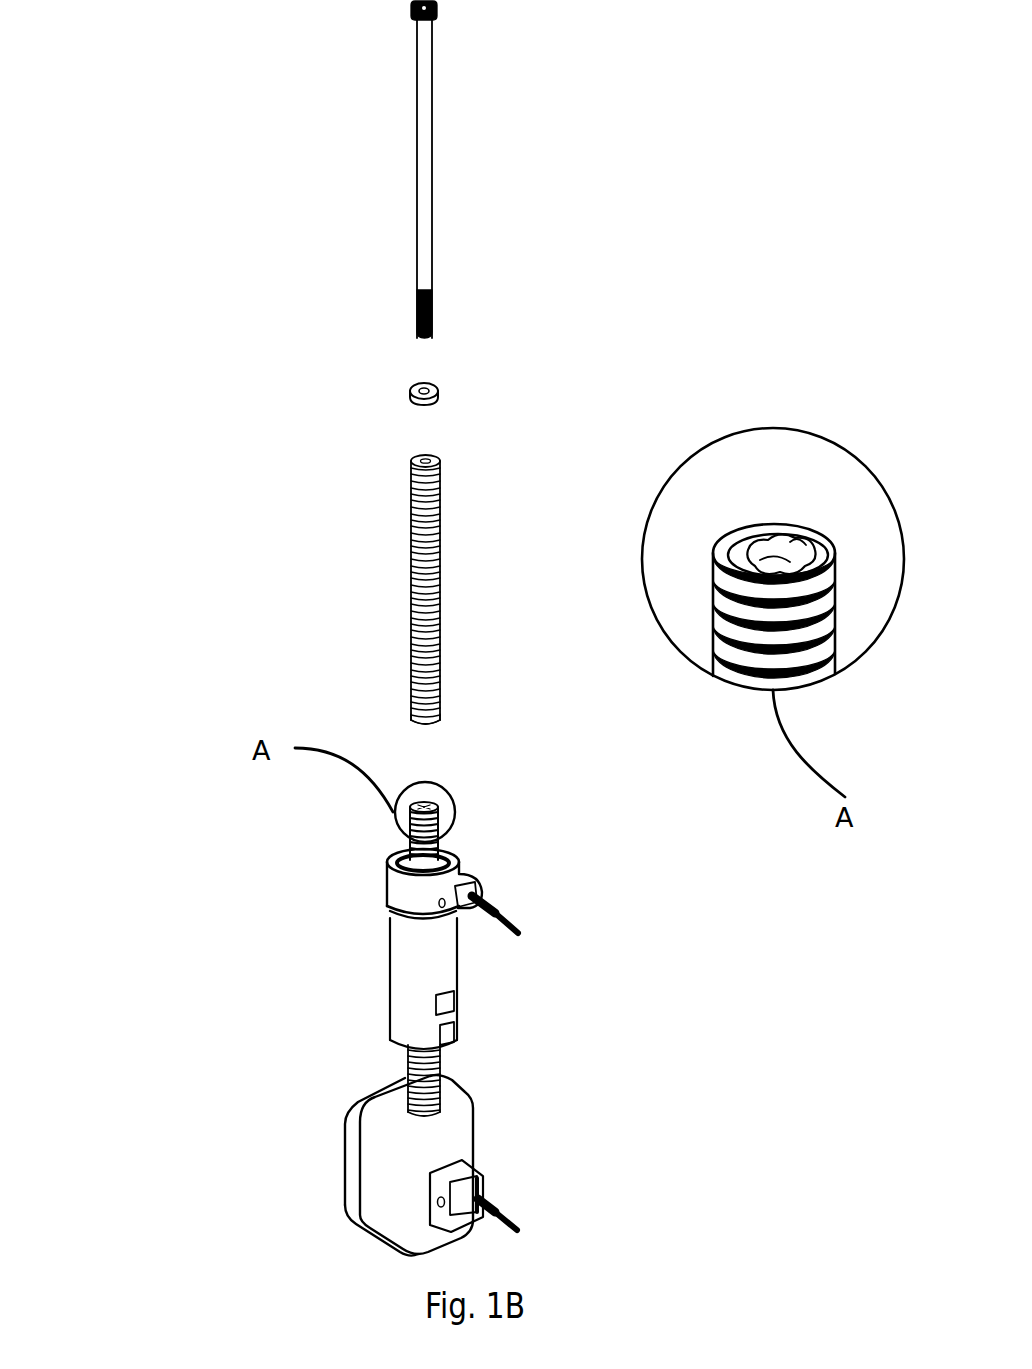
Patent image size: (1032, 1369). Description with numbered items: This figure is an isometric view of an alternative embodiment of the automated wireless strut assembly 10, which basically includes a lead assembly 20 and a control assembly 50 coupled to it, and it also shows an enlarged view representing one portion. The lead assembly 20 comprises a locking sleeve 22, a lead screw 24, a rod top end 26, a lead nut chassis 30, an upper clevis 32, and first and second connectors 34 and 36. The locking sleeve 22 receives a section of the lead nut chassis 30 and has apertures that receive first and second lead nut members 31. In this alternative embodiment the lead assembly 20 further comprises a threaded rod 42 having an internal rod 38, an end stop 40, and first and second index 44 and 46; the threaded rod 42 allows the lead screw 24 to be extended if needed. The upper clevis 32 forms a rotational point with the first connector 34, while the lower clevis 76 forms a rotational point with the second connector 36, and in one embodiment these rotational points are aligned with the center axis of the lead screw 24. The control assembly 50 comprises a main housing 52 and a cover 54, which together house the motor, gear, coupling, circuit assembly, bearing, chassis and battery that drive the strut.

The automated wireless strut assembly 10 is at (72, 138).
The lead assembly 20 is at (655, 957).
The locking sleeve 22 is at (405, 970).
The lead screw 24 is at (440, 1077).
The rod top end 26 is at (813, 545).
The lead nut chassis 30 is at (452, 862).
The first and second lead nut members 31 is at (452, 1038).
The upper clevis 32 is at (388, 888).
The first connector 34 is at (490, 900).
The second connector 36 is at (525, 1214).
The internal rod 38 is at (428, 226).
The end stop 40 is at (411, 390).
The threaded rod 42 is at (412, 565).
The first index 44 is at (432, 724).
The second index 46 is at (765, 568).
The control assembly 50 is at (222, 1118).
The main housing 52 is at (463, 1129).
The cover 54 is at (350, 1178).
The lower clevis 76 is at (483, 1170).